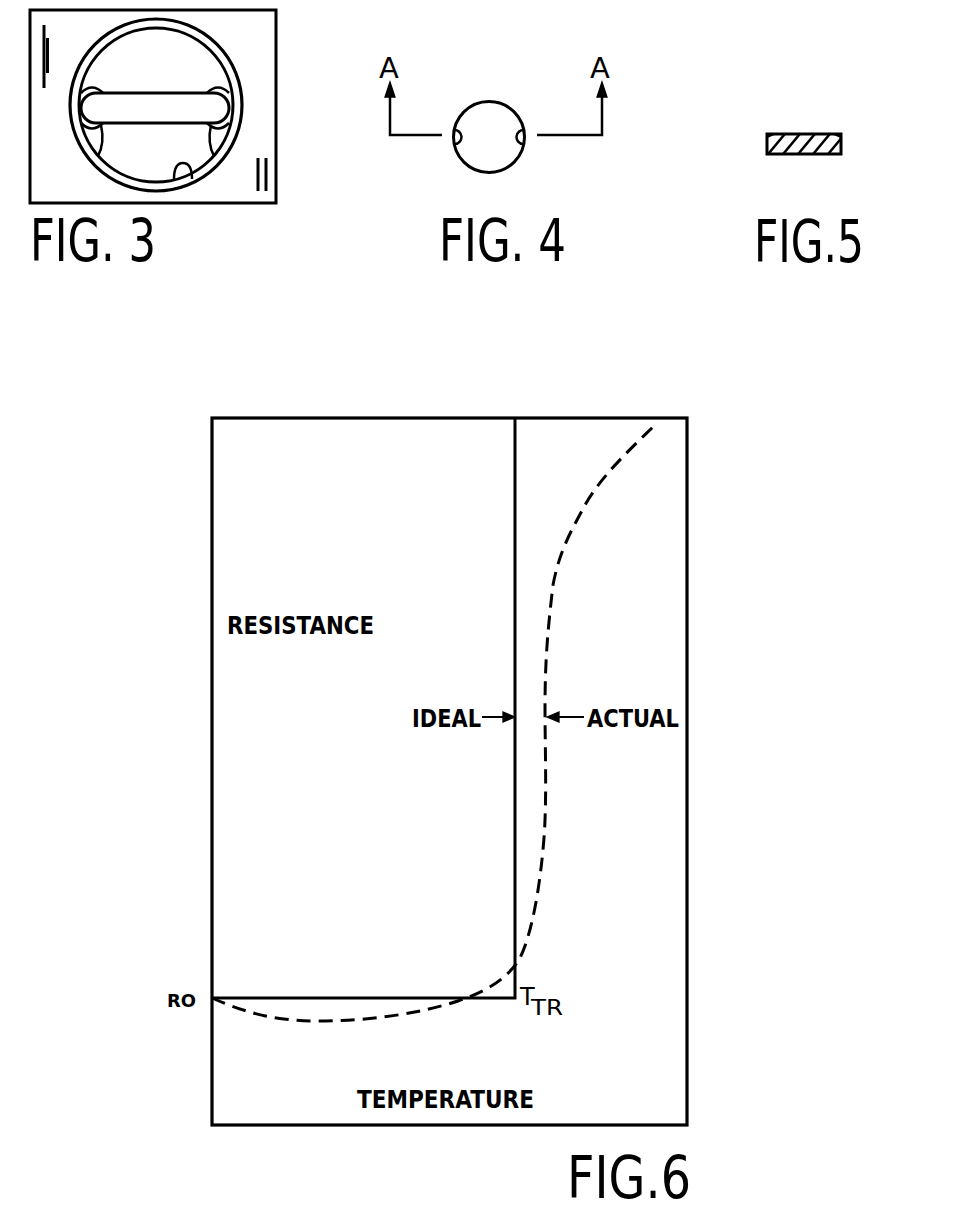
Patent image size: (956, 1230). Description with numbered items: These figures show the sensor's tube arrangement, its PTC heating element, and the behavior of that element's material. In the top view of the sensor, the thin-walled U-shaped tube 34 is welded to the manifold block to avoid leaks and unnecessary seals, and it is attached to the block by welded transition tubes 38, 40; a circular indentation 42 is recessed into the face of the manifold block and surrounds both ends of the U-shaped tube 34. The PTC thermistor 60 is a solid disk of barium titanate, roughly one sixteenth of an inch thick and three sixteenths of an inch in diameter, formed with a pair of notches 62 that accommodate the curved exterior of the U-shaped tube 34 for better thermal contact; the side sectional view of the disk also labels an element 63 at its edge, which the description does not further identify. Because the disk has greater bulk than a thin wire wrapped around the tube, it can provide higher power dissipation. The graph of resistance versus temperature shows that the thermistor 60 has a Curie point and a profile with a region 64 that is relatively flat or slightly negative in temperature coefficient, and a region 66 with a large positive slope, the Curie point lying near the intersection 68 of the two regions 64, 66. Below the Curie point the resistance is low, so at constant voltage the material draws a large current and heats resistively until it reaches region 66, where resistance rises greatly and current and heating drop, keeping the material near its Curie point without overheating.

In FIG. 3, the U-shaped tube 34 is at (132, 85).
In FIG. 3, the welded transition tube 38 is at (205, 149).
In FIG. 3, the welded transition tube 40 is at (84, 151).
In FIG. 3, the circular indentation 42 is at (174, 160).
In FIG. 4, the PTC thermistor 60 is at (488, 94).
In FIG. 5, the PTC thermistor 60 is at (796, 148).
In FIG. 4, the notches 62 is at (446, 123).
In FIG. 5, the notches 62 is at (761, 128).
In FIG. 5, the electrode layer 63 is at (829, 127).
In FIG. 6, the region 64 is at (279, 1012).
In FIG. 6, the region 66 is at (537, 813).
In FIG. 6, the intersection 68 is at (450, 992).